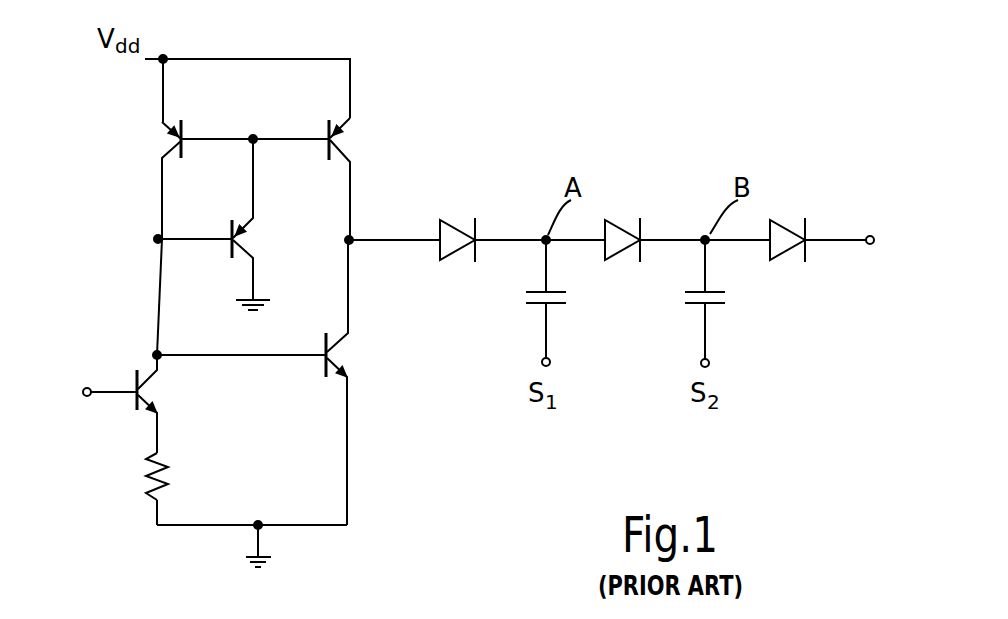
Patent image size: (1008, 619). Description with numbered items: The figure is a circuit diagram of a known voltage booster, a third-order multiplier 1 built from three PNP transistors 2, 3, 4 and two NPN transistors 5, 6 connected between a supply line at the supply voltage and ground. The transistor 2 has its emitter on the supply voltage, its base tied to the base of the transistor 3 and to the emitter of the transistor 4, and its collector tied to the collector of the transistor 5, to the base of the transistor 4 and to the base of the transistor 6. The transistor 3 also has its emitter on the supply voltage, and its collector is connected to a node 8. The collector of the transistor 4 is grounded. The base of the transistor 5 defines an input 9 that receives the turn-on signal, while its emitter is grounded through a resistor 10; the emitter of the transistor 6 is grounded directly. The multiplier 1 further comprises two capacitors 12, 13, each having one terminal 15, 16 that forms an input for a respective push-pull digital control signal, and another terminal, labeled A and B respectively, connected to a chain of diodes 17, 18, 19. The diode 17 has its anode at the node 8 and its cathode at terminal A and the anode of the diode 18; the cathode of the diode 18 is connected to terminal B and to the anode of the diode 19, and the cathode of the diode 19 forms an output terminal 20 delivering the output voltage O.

The third-order multiplier 1 is at (551, 133).
The PNP transistor 2 is at (168, 140).
The PNP transistor 3 is at (340, 137).
The PNP transistor 4 is at (246, 239).
The NPN transistor 5 is at (146, 391).
The NPN transistor 6 is at (347, 349).
The node 8 is at (351, 238).
The input 9 is at (87, 399).
The resistor 10 is at (170, 470).
The capacitor 12 is at (560, 300).
The capacitor 13 is at (720, 298).
The terminal 15 is at (551, 361).
The terminal 16 is at (710, 364).
The diode 17 is at (458, 250).
The diode 18 is at (625, 237).
The diode 19 is at (788, 238).
The output terminal 20 is at (870, 247).